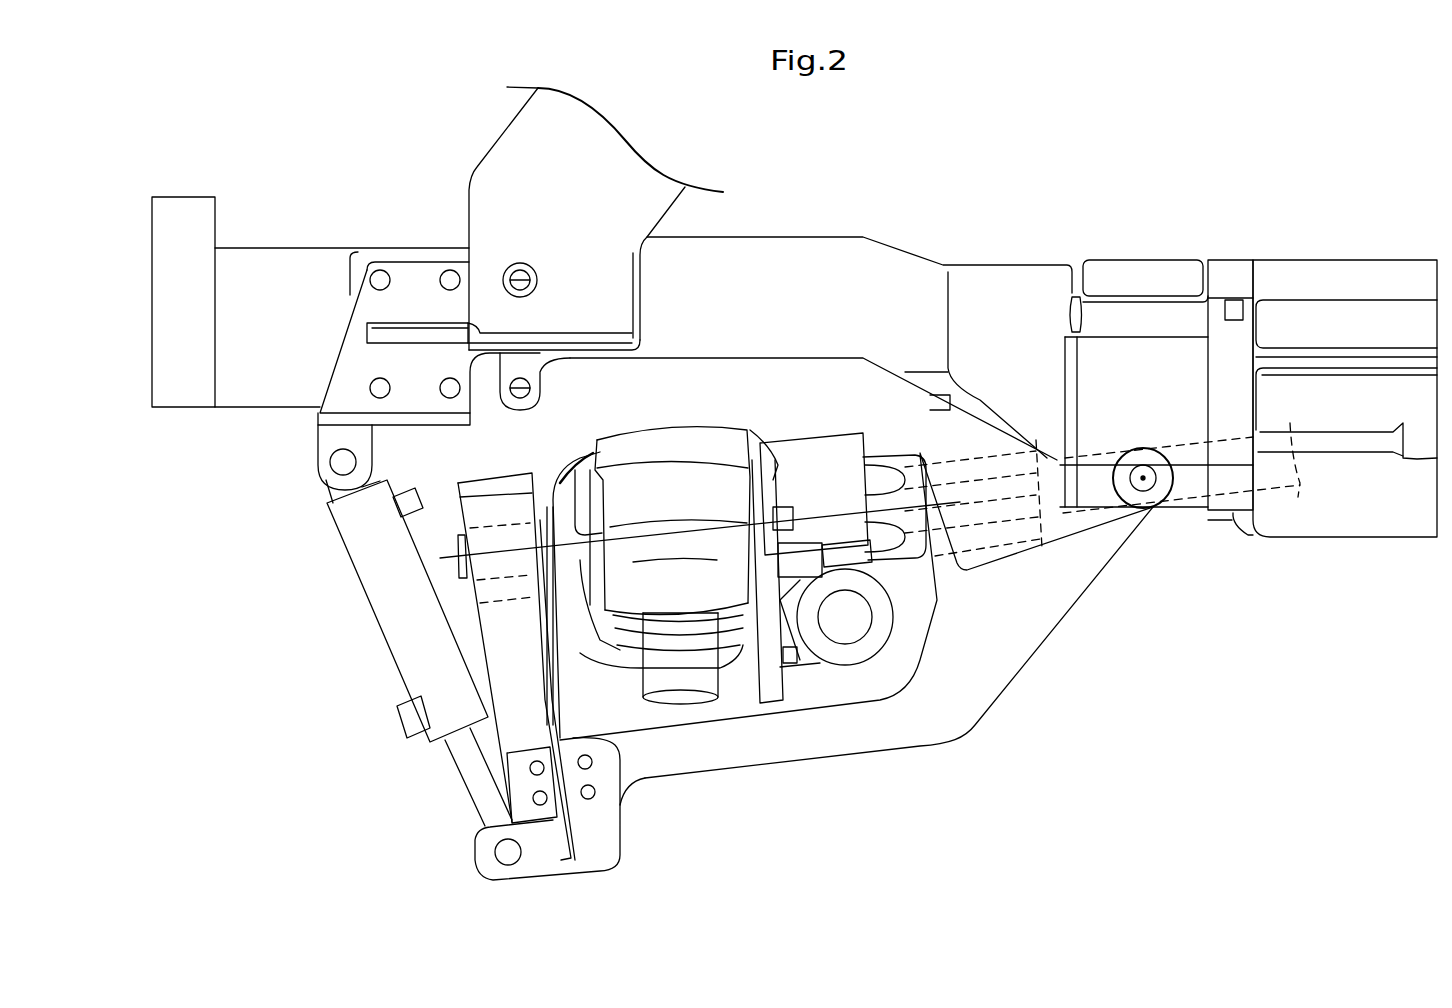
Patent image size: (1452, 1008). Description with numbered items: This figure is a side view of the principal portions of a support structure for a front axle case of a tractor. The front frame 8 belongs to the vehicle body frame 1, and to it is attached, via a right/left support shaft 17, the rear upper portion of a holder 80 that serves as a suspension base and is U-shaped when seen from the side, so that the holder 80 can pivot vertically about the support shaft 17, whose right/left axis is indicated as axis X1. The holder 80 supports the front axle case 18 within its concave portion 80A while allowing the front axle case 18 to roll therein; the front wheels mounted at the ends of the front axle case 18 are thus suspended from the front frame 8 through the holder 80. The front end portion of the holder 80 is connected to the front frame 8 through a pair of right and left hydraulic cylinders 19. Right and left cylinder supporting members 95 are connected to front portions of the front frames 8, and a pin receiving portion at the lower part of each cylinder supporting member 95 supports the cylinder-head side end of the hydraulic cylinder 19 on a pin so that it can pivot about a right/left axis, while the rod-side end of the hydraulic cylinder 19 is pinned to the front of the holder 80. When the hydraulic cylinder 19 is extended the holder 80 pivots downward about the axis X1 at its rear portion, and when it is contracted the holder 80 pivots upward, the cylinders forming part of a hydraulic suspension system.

The vehicle body frame 1 is at (795, 234).
The front frame 8 is at (892, 262).
The cylinder supporting member 95 is at (347, 370).
The hydraulic cylinder 19 is at (375, 590).
The front axle case 18 is at (720, 437).
The holder 80 is at (850, 750).
The concave portion 80A is at (911, 665).
The right/left axis X1 is at (1140, 472).
The support shaft 17 is at (1157, 490).